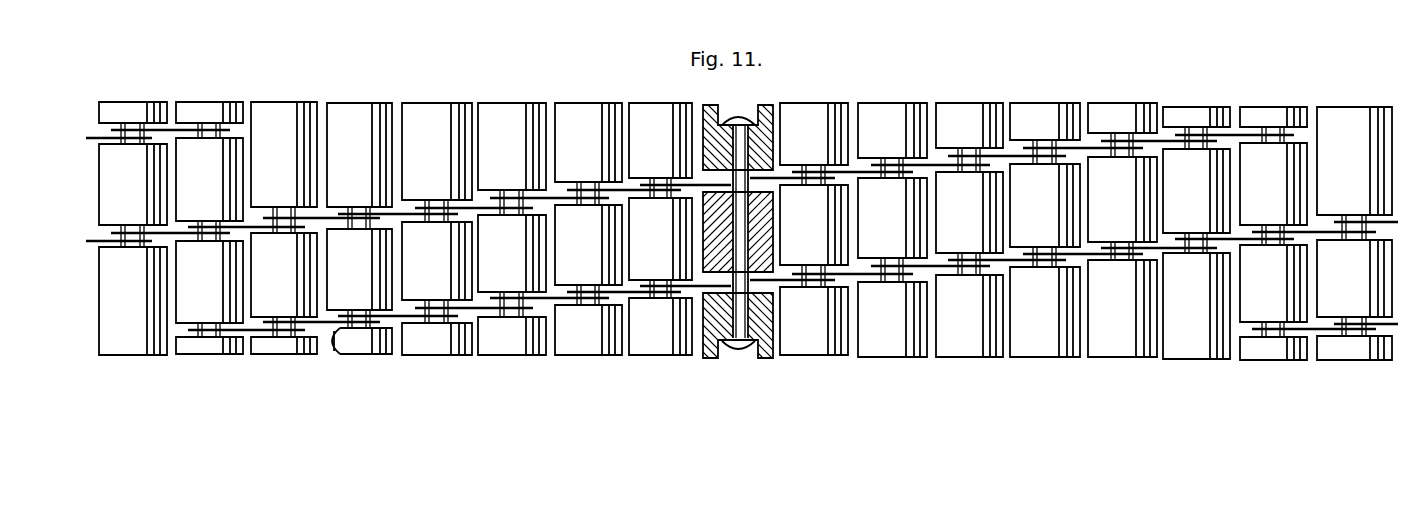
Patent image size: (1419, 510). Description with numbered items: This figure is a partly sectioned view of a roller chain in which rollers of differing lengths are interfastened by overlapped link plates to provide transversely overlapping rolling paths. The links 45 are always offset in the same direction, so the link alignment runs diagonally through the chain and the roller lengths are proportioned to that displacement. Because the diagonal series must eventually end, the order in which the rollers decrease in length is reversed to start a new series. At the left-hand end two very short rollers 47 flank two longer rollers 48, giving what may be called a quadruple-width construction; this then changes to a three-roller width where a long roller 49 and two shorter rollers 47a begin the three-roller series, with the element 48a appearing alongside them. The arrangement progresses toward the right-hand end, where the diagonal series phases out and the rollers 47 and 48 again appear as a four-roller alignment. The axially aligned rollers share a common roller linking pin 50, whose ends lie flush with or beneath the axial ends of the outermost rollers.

The links 45 is at (332, 352).
The very short rollers 47 is at (223, 102).
The shorter rollers 47a is at (297, 348).
The longer rollers 48 is at (218, 183).
The inner end link plate 48a is at (298, 290).
The long roller 49 is at (287, 108).
The common roller linking pin 50 is at (738, 322).